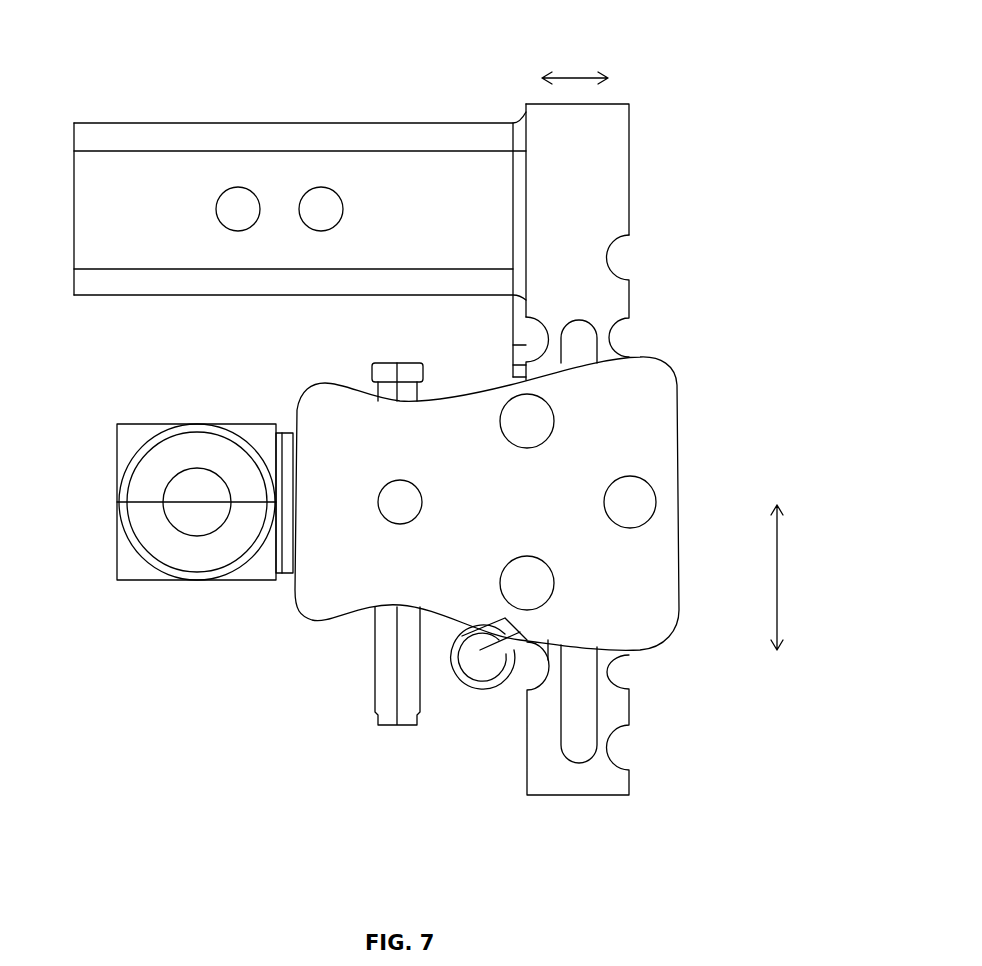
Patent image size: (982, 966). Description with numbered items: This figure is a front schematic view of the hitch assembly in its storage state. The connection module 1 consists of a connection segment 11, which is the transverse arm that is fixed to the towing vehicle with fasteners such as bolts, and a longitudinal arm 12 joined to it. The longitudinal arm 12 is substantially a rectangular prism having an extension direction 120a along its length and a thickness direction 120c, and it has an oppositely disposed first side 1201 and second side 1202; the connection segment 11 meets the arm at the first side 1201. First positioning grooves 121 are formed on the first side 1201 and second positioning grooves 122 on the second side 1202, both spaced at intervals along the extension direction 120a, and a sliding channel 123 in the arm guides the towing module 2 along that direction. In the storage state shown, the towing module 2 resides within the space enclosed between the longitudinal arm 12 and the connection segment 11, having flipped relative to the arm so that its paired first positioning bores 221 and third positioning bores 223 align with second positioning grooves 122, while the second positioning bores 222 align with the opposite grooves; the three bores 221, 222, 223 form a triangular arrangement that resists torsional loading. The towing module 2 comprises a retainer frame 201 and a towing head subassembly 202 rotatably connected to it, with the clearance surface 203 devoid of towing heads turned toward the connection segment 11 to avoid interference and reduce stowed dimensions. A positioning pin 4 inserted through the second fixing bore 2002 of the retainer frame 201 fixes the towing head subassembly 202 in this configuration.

The connection module 1 is at (407, 105).
The connection segment 11 is at (100, 130).
The longitudinal arm 12 is at (570, 710).
The first side 1201 is at (510, 360).
The second side 1202 is at (643, 178).
The first positioning groove 121 is at (618, 264).
The second positioning groove 122 is at (543, 335).
The sliding channel 123 is at (580, 735).
The extension direction 120a is at (807, 577).
The thickness direction 120c is at (575, 64).
The towing module 2 is at (706, 462).
The retainer frame 201 is at (650, 402).
The towing head subassembly 202 is at (147, 428).
The clearance surface 203 is at (192, 422).
The second fixing bore 2002 is at (392, 508).
The first positioning bore 221 is at (515, 592).
The second positioning bore 222 is at (657, 499).
The third positioning bore 223 is at (518, 396).
The positioning pin 4 is at (392, 716).